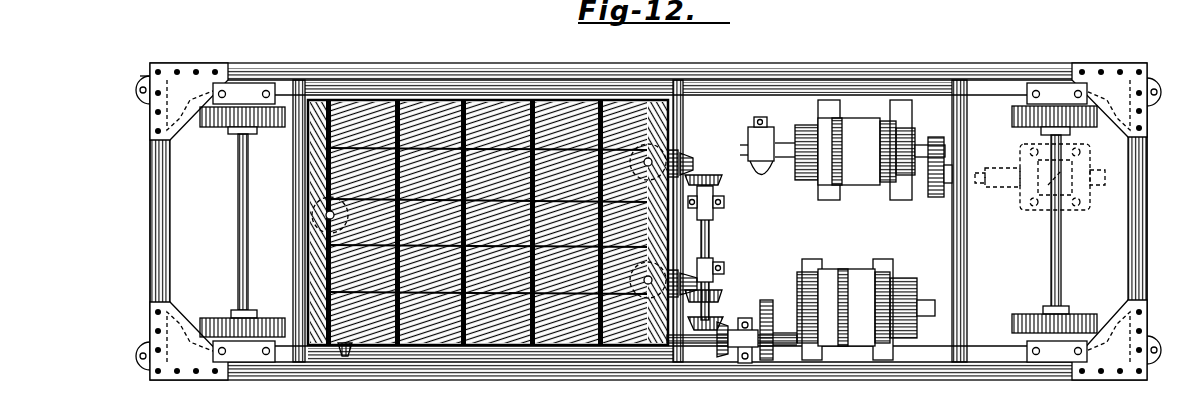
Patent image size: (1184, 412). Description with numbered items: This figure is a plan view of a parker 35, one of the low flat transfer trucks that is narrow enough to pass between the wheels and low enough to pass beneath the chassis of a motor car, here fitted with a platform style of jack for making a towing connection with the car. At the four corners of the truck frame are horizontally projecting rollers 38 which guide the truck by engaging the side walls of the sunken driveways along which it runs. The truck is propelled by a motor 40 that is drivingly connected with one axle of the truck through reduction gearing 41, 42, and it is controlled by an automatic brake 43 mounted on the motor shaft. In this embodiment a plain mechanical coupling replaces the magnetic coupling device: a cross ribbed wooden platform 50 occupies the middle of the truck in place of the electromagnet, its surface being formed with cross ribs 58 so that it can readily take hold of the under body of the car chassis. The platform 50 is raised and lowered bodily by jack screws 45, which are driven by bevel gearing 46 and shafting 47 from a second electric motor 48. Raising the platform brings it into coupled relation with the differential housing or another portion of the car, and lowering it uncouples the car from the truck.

The parker 35 is at (158, 219).
The horizontally projecting rollers 38 is at (136, 86).
The motor 40 is at (860, 150).
The reduction gearing 41 is at (936, 196).
The reduction gearing 42 is at (1044, 212).
The automatic brake 43 is at (765, 140).
The jack screws 45 is at (316, 212).
The bevel gearing 46 is at (701, 176).
The shafting 47 is at (703, 340).
The electric motor 48 is at (854, 309).
The cross ribbed wooden platform 50 is at (490, 112).
The cross ribs 58 is at (455, 105).